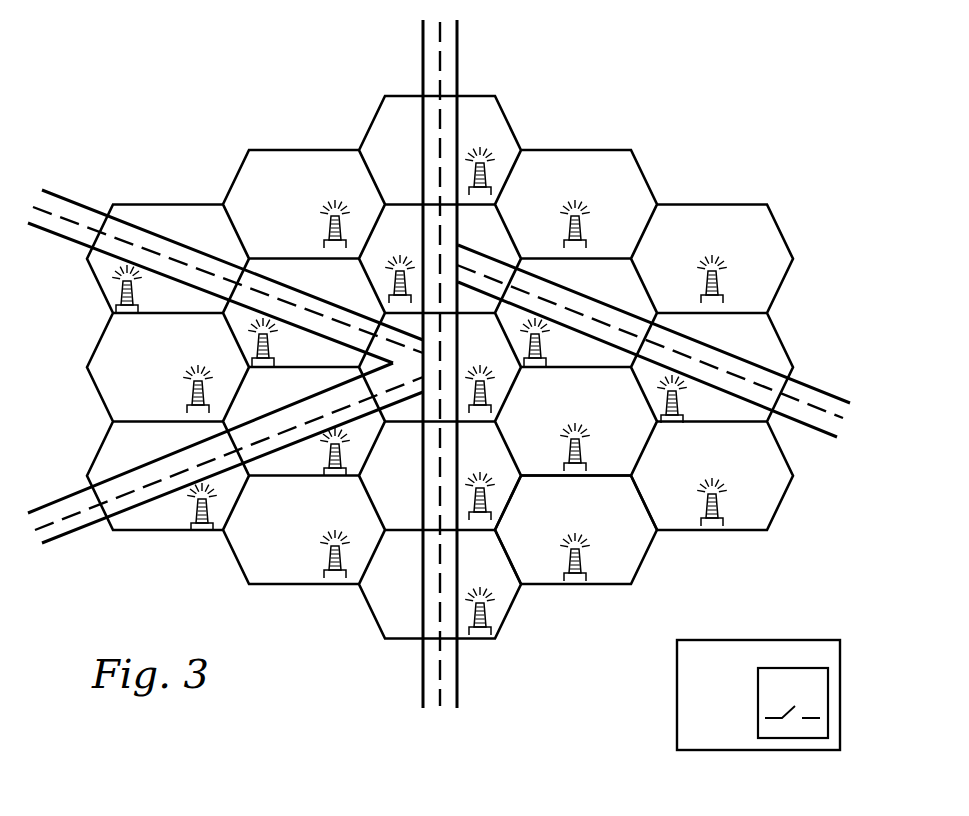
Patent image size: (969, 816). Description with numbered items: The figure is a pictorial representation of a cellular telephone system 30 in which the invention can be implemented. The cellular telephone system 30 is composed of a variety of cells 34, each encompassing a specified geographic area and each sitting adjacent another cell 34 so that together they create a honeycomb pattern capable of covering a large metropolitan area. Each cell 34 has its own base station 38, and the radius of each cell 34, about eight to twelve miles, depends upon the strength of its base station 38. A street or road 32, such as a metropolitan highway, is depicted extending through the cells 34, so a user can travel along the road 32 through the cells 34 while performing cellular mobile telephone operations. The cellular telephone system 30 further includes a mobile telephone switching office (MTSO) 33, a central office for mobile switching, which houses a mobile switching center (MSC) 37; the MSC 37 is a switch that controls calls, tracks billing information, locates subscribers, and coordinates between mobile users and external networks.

The cellular telephone system 30 is at (742, 88).
The road 32 is at (61, 195).
The mobile telephone switching office (MTSO) 33 is at (840, 660).
The cell 34 is at (638, 573).
The mobile switching center (MSC) 37 is at (828, 703).
The base station 38 is at (489, 606).